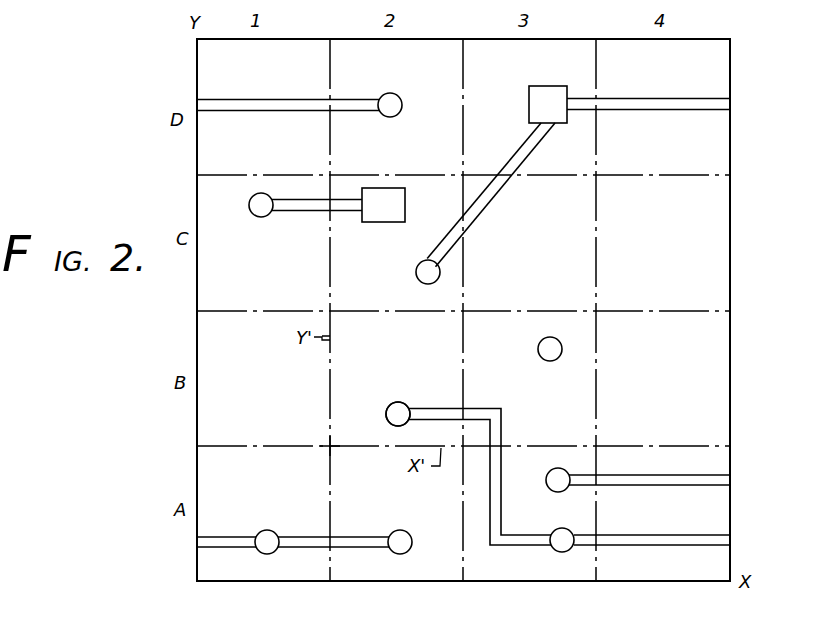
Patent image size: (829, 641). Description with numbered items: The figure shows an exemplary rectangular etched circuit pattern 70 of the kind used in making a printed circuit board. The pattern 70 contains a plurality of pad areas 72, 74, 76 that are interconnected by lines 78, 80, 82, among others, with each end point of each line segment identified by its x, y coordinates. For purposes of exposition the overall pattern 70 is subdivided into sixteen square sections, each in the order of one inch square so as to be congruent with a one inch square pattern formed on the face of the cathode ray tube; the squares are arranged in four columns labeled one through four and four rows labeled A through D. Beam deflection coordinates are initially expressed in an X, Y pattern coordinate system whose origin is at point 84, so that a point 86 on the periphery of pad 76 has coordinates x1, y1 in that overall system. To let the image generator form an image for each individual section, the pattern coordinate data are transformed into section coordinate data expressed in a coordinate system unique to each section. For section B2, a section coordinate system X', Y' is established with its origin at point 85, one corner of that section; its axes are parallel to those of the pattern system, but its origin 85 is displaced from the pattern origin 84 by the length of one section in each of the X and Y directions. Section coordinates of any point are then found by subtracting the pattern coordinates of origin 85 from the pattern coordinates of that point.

The rectangular pattern 70 is at (731, 380).
The pad area 72 is at (266, 530).
The pad area 74 is at (404, 530).
The pad area 76 is at (391, 415).
The line 78 is at (237, 536).
The line 80 is at (321, 536).
The line 82 is at (449, 407).
The origin point 84 is at (197, 581).
The section coordinate system origin 85 is at (330, 446).
The point on pad periphery 86 is at (391, 405).